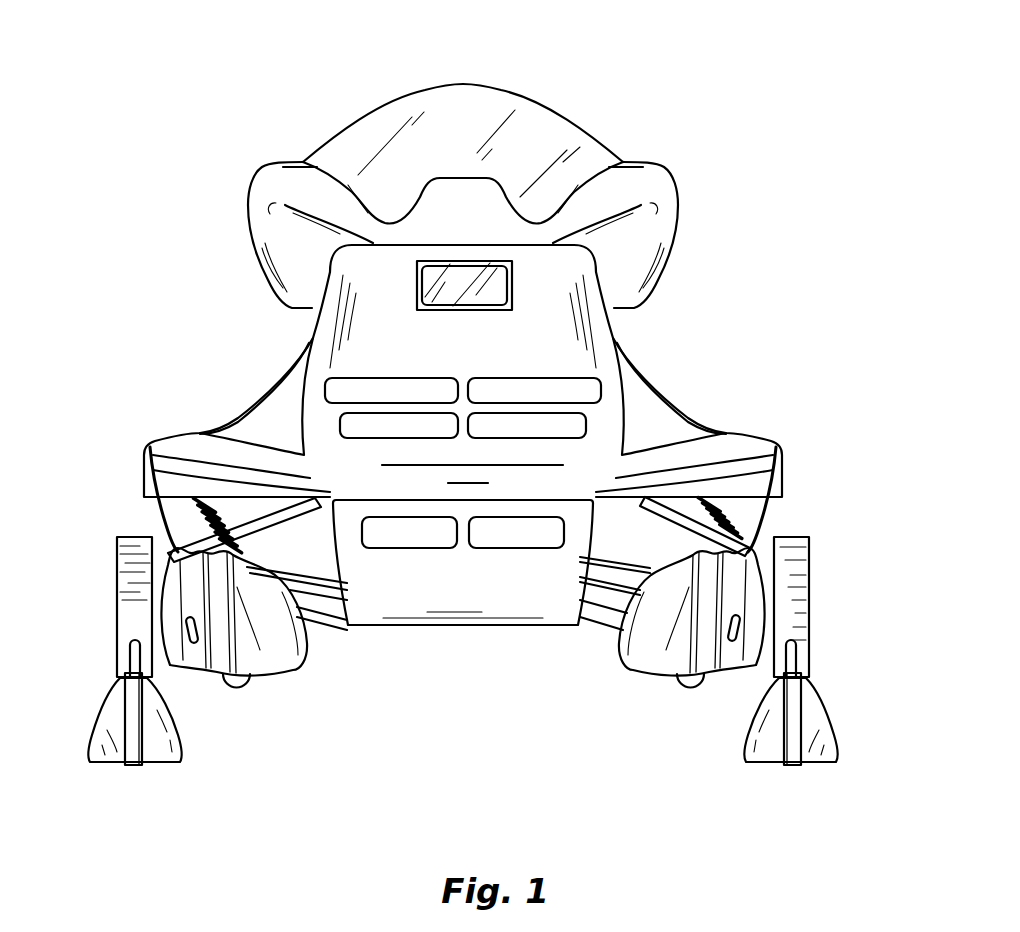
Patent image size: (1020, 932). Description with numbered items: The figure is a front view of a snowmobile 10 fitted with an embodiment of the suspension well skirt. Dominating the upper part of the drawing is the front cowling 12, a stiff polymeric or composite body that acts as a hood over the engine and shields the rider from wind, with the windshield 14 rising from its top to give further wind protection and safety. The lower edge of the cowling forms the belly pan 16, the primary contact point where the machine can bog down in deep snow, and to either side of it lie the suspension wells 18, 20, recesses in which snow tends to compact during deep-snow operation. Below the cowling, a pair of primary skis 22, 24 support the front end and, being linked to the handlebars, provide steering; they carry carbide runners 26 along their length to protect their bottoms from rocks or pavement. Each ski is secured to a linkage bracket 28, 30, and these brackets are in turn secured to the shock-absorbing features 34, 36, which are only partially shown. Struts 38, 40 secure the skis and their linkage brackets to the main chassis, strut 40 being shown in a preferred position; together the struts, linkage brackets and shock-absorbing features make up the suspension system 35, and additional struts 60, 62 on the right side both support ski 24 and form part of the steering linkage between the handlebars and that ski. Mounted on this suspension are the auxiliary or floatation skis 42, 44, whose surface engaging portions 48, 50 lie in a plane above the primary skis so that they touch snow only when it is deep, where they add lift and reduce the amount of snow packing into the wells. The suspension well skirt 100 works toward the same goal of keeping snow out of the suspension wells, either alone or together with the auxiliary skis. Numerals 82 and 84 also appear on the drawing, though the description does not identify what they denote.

The snowmobile 10 is at (248, 78).
The front cowling 12 is at (187, 427).
The windshield 14 is at (398, 96).
The belly pan 16 is at (440, 621).
The suspension well 18 is at (262, 545).
The suspension well 20 is at (650, 525).
The ski 22 is at (90, 735).
The ski 24 is at (820, 752).
The carbide runners 26 is at (137, 767).
The linkage bracket 28 is at (117, 633).
The linkage bracket 30 is at (808, 600).
The shock-absorbing feature 34 is at (150, 445).
The suspension system 35 is at (352, 643).
The shock-absorbing feature 36 is at (722, 495).
The strut 38 is at (150, 543).
The strut 40 is at (777, 533).
The auxiliary ski 42 is at (253, 680).
The auxiliary ski 44 is at (620, 677).
The surface engaging portion 48 is at (288, 670).
The surface engaging portion 50 is at (655, 678).
The strut 60 is at (310, 627).
The strut 62 is at (295, 512).
The ball joint 82 is at (235, 690).
The slot 84 is at (197, 645).
The suspension well skirt 100 is at (146, 520).